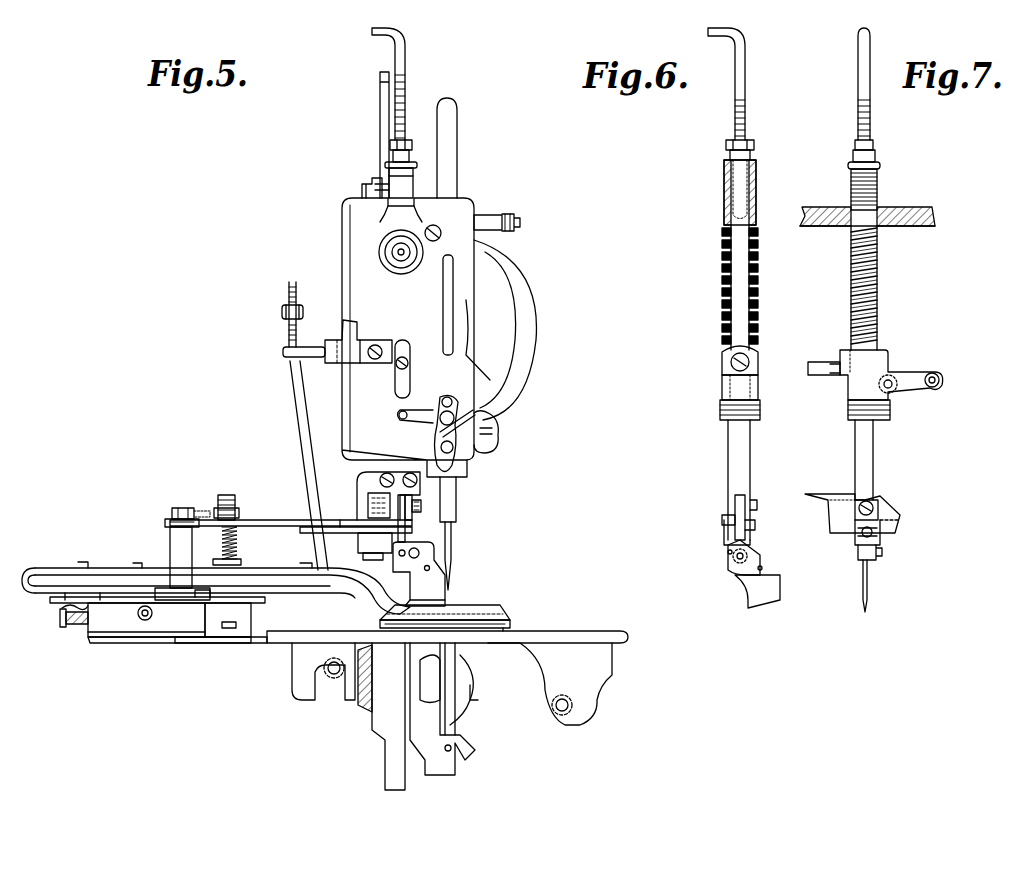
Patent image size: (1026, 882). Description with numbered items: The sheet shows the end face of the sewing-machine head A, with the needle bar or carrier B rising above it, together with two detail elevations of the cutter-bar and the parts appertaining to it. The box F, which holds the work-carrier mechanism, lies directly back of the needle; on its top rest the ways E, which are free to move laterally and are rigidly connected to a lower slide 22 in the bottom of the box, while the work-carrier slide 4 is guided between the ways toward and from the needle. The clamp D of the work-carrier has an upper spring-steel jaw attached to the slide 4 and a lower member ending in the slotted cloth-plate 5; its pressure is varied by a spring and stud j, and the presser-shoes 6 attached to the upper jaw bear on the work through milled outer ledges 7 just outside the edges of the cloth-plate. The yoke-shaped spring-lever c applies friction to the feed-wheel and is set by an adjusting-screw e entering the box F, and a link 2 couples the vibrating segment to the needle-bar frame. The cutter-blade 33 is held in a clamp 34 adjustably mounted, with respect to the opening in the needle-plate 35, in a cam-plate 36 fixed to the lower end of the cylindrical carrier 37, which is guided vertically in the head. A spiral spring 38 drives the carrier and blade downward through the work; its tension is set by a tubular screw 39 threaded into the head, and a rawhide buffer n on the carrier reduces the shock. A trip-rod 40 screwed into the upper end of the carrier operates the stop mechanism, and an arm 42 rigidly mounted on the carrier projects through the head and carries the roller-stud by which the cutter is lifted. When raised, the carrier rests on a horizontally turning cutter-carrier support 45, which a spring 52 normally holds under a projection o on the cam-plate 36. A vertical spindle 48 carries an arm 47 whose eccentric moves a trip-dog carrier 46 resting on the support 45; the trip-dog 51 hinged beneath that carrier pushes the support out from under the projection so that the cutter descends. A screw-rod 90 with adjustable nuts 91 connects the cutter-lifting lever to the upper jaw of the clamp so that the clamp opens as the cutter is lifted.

In FIG. 5, the link 2 is at (516, 220).
In FIG. 5, the slide 4 is at (52, 600).
In FIG. 5, the cloth-plate 5 is at (548, 615).
In FIG. 5, the presser-shoes 6 is at (470, 606).
In FIG. 5, the outer side ledges 7 is at (508, 620).
In FIG. 5, the lower slide 22 is at (240, 643).
In FIG. 5, the cutter-blade 33 is at (445, 596).
In FIG. 6, the cutter-blade 33 is at (860, 590).
In FIG. 7, the cutter-blade 33 is at (860, 590).
In FIG. 5, the clamp 34 is at (425, 561).
In FIG. 6, the clamp 34 is at (850, 555).
In FIG. 7, the clamp 34 is at (850, 555).
In FIG. 5, the needle-plate 35 is at (505, 629).
In FIG. 5, the cam-plate 36 is at (420, 506).
In FIG. 6, the cam-plate 36 is at (750, 520).
In FIG. 7, the cam-plate 36 is at (835, 517).
In FIG. 5, the carrier 37 is at (420, 488).
In FIG. 6, the carrier 37 is at (853, 457).
In FIG. 7, the carrier 37 is at (853, 457).
In FIG. 6, the spiral spring 38 is at (845, 283).
In FIG. 7, the spiral spring 38 is at (845, 283).
In FIG. 5, the tubular screw 39 is at (393, 171).
In FIG. 6, the tubular screw 39 is at (845, 186).
In FIG. 7, the tubular screw 39 is at (845, 186).
In FIG. 5, the trip-rod 40 is at (406, 92).
In FIG. 6, the trip-rod 40 is at (862, 88).
In FIG. 7, the trip-rod 40 is at (862, 88).
In FIG. 6, the arm 42 is at (850, 387).
In FIG. 7, the arm 42 is at (850, 387).
In FIG. 5, the cutter-carrier support 45 is at (450, 533).
In FIG. 5, the trip-dog carrier 46 is at (291, 513).
In FIG. 5, the arm 47 is at (210, 532).
In FIG. 5, the spindle 48 is at (178, 512).
In FIG. 5, the trip-dog 51 is at (330, 536).
In FIG. 5, the spring 52 is at (372, 500).
In FIG. 5, the screw-rod 90 is at (304, 436).
In FIG. 5, the nuts 91 is at (282, 310).
In FIG. 5, the head A is at (426, 337).
In FIG. 7, the head A is at (925, 197).
In FIG. 5, the needle bar B is at (445, 168).
In FIG. 5, the clamp D is at (216, 581).
In FIG. 5, the ways E is at (148, 635).
In FIG. 5, the box F is at (208, 640).
In FIG. 5, the spring-lever c is at (66, 620).
In FIG. 5, the adjusting-screw e is at (82, 628).
In FIG. 5, the spring and stud j is at (240, 542).
In FIG. 6, the buffer n is at (850, 410).
In FIG. 7, the buffer n is at (850, 410).
In FIG. 6, the projection o is at (725, 520).
In FIG. 7, the projection o is at (915, 521).